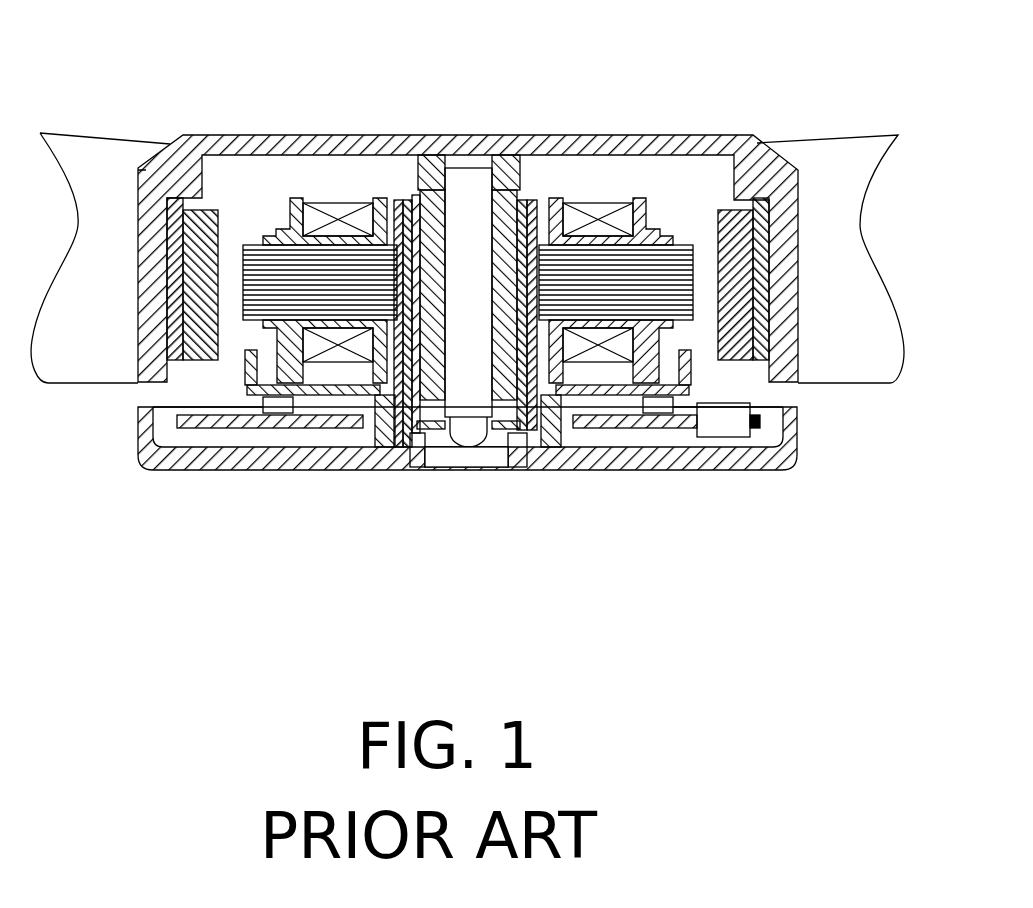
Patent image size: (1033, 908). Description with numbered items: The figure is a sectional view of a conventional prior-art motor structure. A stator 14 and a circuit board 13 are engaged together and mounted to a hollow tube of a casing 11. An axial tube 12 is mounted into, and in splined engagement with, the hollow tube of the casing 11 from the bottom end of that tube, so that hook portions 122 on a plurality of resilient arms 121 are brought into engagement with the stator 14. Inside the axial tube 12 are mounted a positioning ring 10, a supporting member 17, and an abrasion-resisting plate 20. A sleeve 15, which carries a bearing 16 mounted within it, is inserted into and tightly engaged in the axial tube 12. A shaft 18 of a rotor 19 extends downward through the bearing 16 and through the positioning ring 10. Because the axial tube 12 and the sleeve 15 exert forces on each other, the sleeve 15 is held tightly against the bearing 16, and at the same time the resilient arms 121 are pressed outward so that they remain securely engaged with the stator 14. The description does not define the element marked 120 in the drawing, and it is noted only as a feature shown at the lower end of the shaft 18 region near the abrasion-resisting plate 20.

The positioning ring 10 is at (415, 459).
The casing 11 is at (195, 470).
The axial tube 12 is at (537, 463).
The circuit board 13 is at (697, 437).
The stator 14 is at (657, 223).
The sleeve 15 is at (509, 155).
The bearing 16 is at (420, 155).
The supporting member 17 is at (440, 430).
The shaft 18 is at (468, 168).
The rotor 19 is at (628, 135).
The abrasion-resisting plate 20 is at (473, 462).
The shaft end cap 120 is at (495, 457).
The resilient arms 121 is at (377, 365).
The hook portions 122 is at (397, 200).